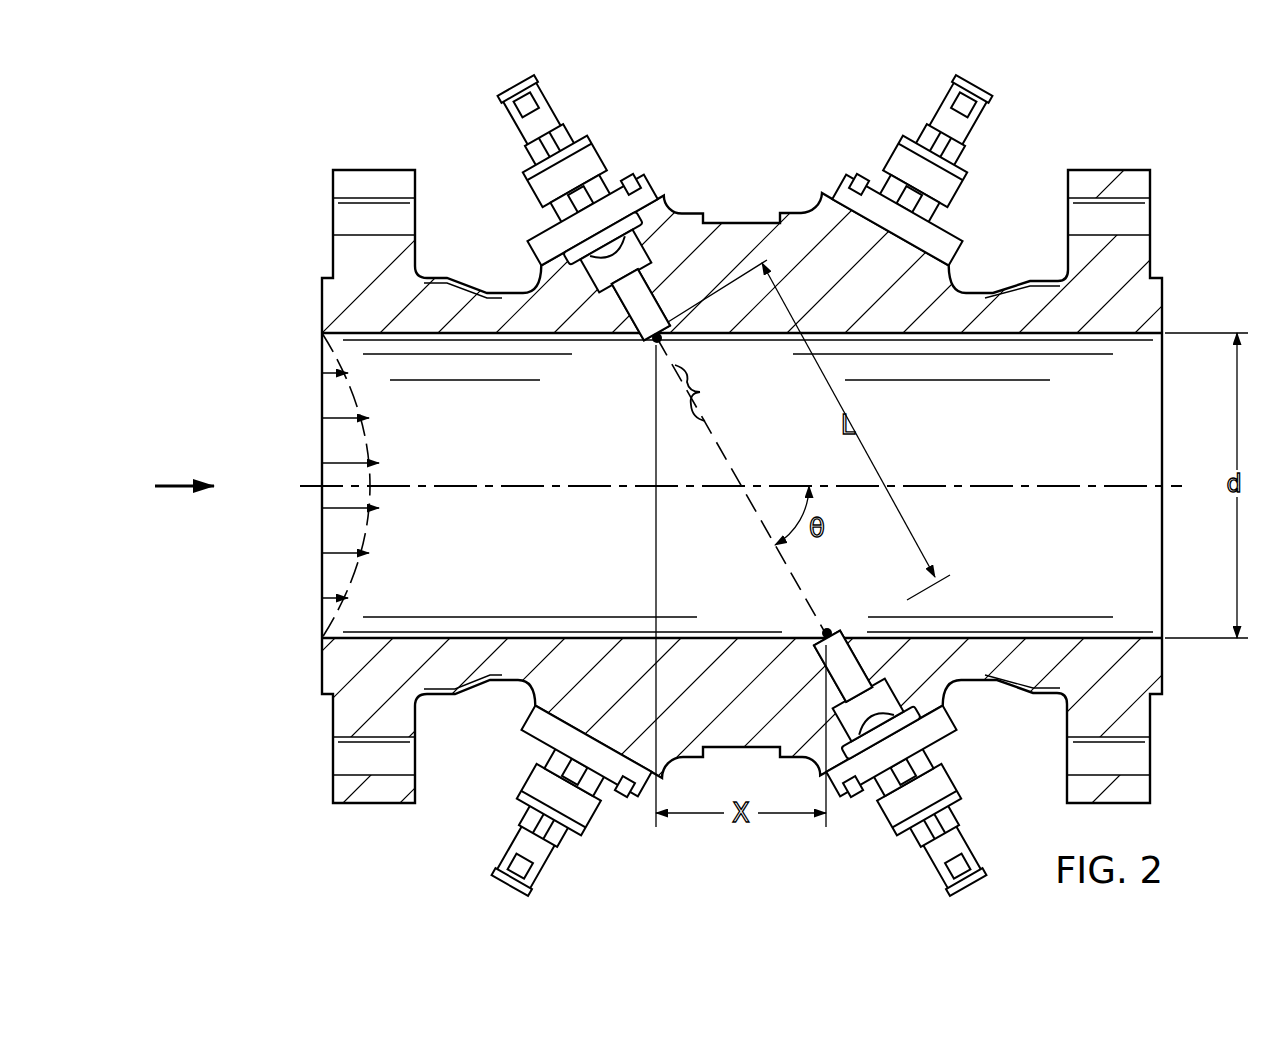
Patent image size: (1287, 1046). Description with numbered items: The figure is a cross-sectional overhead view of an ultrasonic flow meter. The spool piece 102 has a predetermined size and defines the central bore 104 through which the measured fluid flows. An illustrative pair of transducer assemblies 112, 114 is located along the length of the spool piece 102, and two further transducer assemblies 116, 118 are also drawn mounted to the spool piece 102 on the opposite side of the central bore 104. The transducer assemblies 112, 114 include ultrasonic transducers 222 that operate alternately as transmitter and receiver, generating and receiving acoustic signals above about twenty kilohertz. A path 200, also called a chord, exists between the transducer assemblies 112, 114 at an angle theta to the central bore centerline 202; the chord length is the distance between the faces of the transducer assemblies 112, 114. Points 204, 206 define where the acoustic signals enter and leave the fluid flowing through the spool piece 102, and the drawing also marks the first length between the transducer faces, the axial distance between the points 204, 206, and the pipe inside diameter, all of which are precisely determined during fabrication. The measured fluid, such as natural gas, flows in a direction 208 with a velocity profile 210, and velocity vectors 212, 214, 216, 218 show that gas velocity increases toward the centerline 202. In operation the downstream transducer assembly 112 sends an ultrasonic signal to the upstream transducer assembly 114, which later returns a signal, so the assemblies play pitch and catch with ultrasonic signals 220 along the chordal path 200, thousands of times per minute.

The spool piece 102 is at (748, 212).
The central bore 104 is at (962, 440).
The transducer assembly 112 is at (932, 870).
The transducer assembly 114 is at (592, 150).
The ultrasonic transducer 116 is at (550, 870).
The ultrasonic transducer 118 is at (937, 107).
The path 200 is at (790, 578).
The central bore centerline 202 is at (1019, 490).
The point 204 is at (829, 628).
The point 206 is at (650, 345).
The direction 208 is at (178, 485).
The velocity profile 210 is at (375, 437).
The velocity vector 212 is at (322, 418).
The velocity vector 214 is at (322, 463).
The velocity vector 216 is at (322, 508).
The velocity vector 218 is at (322, 553).
The ultrasonic signals 220 is at (702, 392).
The ultrasonic transducer 222 is at (630, 302).